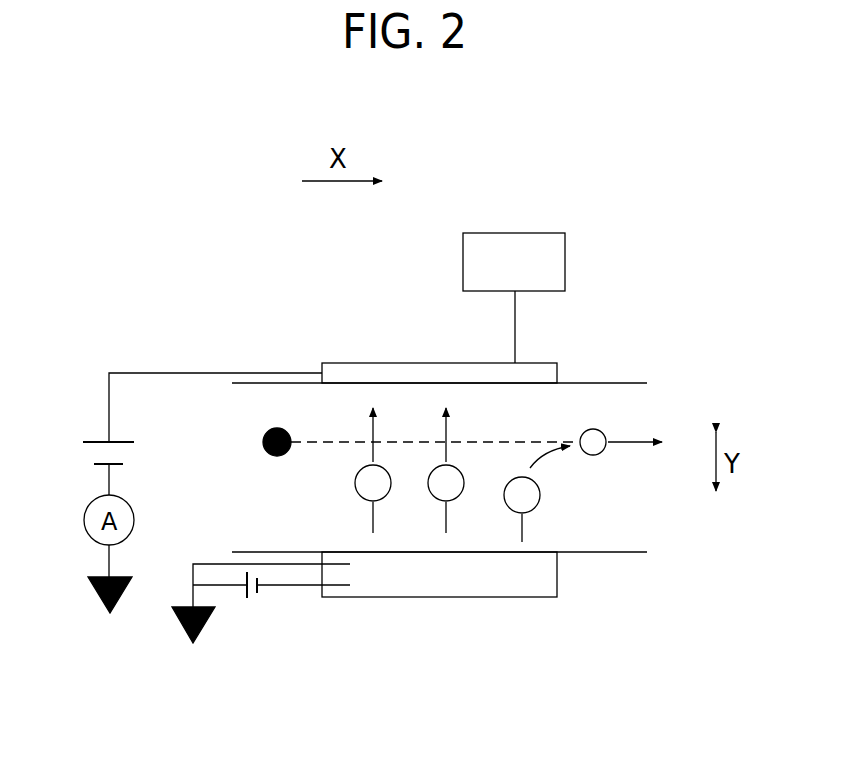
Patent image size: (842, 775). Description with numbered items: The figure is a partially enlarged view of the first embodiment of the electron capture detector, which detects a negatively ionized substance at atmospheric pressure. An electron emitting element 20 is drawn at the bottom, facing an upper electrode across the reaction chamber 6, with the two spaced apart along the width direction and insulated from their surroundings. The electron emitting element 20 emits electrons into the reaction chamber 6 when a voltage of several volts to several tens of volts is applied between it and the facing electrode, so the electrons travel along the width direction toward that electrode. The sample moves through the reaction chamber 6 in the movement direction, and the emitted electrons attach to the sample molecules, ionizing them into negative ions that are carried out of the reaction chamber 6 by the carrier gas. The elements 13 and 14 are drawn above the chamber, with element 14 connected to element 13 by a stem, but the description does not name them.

The upper electrode 13 is at (400, 367).
The power supply 14 is at (543, 232).
The electron emitting element 20 is at (486, 583).
The reaction chamber 6 is at (576, 525).